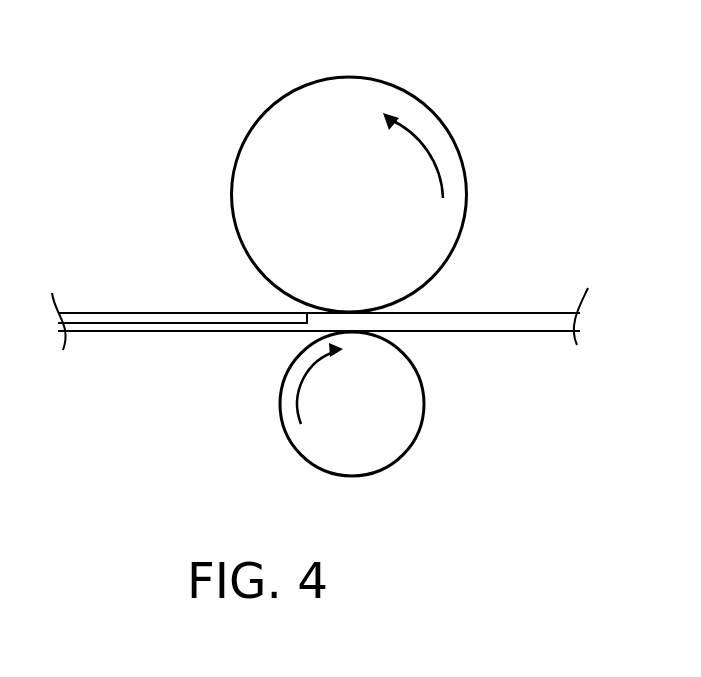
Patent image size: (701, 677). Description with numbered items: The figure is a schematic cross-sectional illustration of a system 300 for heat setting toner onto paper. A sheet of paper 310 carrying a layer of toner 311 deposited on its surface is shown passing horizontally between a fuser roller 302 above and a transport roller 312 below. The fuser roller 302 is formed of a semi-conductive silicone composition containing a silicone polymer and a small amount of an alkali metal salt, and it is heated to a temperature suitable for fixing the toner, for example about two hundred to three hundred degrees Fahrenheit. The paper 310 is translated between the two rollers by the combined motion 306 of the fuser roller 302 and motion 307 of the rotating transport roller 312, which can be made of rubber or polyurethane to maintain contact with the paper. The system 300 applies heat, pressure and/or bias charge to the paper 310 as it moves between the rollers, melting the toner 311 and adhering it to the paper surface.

The system 300 is at (557, 464).
The fuser roller 302 is at (467, 184).
The motion of the fuser roller 306 is at (420, 143).
The motion of the transport roller 307 is at (297, 390).
The paper 310 is at (203, 323).
The toner 311 is at (175, 315).
The transport roller 312 is at (383, 466).